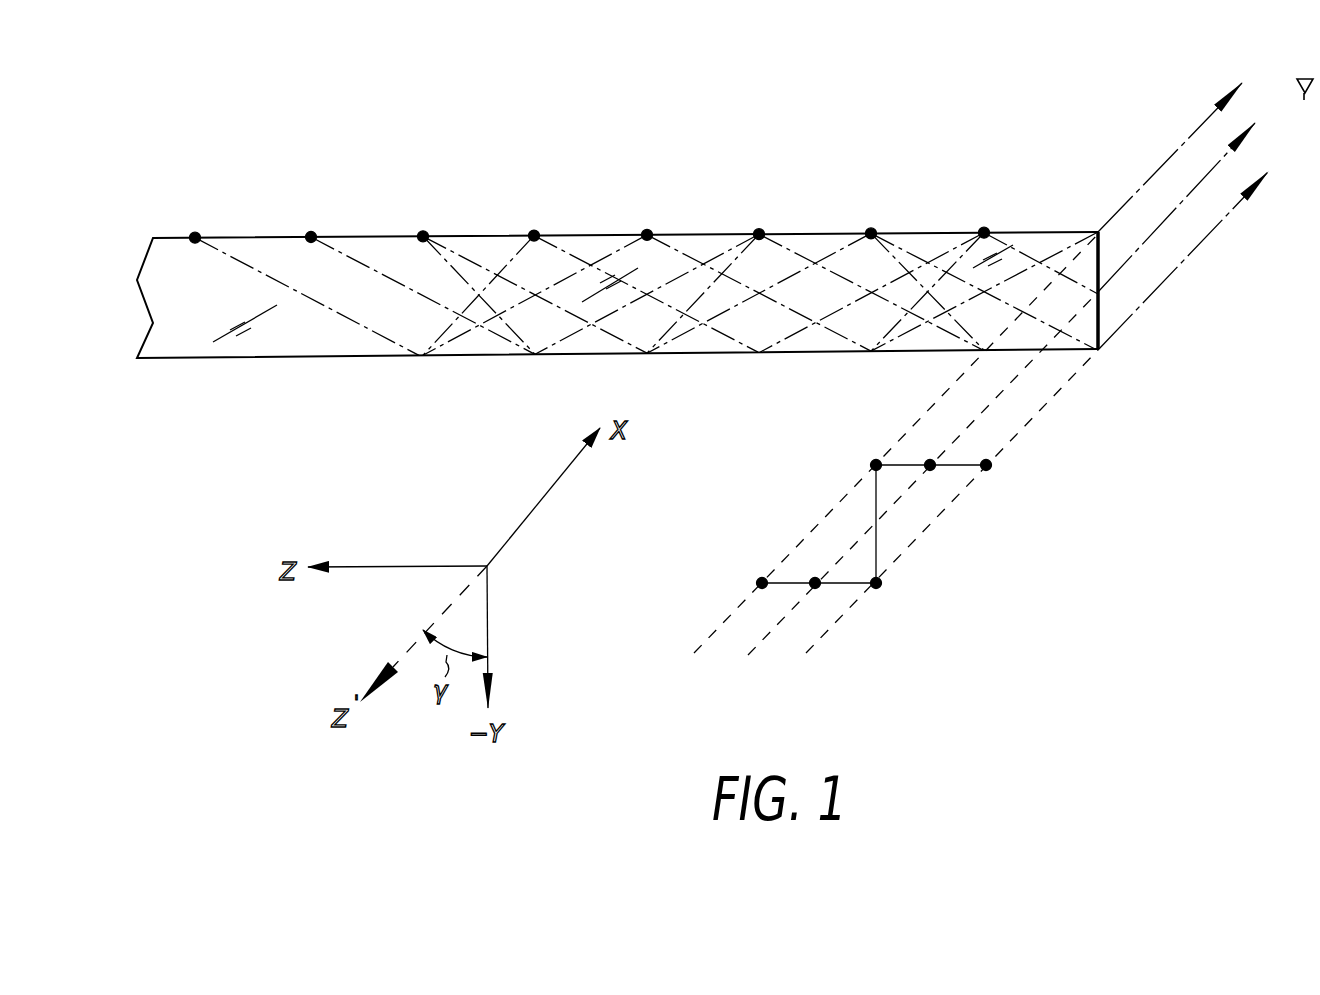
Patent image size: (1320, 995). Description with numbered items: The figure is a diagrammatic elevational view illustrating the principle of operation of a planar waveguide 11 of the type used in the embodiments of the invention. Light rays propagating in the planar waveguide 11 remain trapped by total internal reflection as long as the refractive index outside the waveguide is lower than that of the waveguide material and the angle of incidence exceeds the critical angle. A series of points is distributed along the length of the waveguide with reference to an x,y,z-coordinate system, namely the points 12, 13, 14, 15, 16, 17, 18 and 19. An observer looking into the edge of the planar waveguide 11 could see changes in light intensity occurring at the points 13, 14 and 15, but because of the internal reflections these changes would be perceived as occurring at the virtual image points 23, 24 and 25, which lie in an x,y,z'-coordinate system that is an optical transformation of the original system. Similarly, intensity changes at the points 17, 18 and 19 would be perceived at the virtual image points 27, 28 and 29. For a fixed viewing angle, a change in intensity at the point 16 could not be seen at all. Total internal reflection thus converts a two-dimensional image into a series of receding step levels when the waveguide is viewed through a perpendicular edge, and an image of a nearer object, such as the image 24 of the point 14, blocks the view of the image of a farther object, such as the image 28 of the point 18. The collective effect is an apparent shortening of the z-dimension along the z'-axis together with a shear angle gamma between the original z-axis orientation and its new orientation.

The planar waveguide 11 is at (200, 336).
The light source 12 is at (984, 222).
The point 13 is at (871, 222).
The point 14 is at (759, 223).
The point 15 is at (647, 224).
The point 16 is at (534, 225).
The point 17 is at (423, 225).
The point 18 is at (311, 226).
The point 19 is at (195, 227).
The virtual image point 23 is at (997, 465).
The virtual image point 24 is at (940, 477).
The virtual image point 25 is at (868, 460).
The virtual image point 27 is at (885, 584).
The virtual image point 28 is at (824, 592).
The virtual image point 29 is at (748, 584).